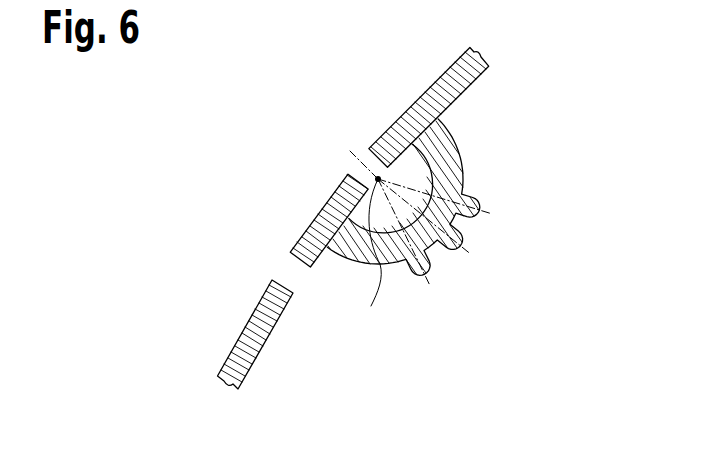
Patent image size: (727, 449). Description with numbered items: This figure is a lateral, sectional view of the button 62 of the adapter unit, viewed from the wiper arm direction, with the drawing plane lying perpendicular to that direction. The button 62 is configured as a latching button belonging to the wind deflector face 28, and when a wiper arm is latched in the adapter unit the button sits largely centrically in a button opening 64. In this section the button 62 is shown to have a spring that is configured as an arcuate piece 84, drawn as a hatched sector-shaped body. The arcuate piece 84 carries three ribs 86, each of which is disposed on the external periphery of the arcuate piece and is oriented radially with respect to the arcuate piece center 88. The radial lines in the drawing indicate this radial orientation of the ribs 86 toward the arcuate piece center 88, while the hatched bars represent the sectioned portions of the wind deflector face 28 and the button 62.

The wind deflector face 28 is at (432, 82).
The button 62 is at (320, 220).
The button opening 64 is at (362, 156).
The arcuate piece 84 is at (450, 153).
The ribs 86 is at (505, 201).
The arcuate piece center 88 is at (368, 262).